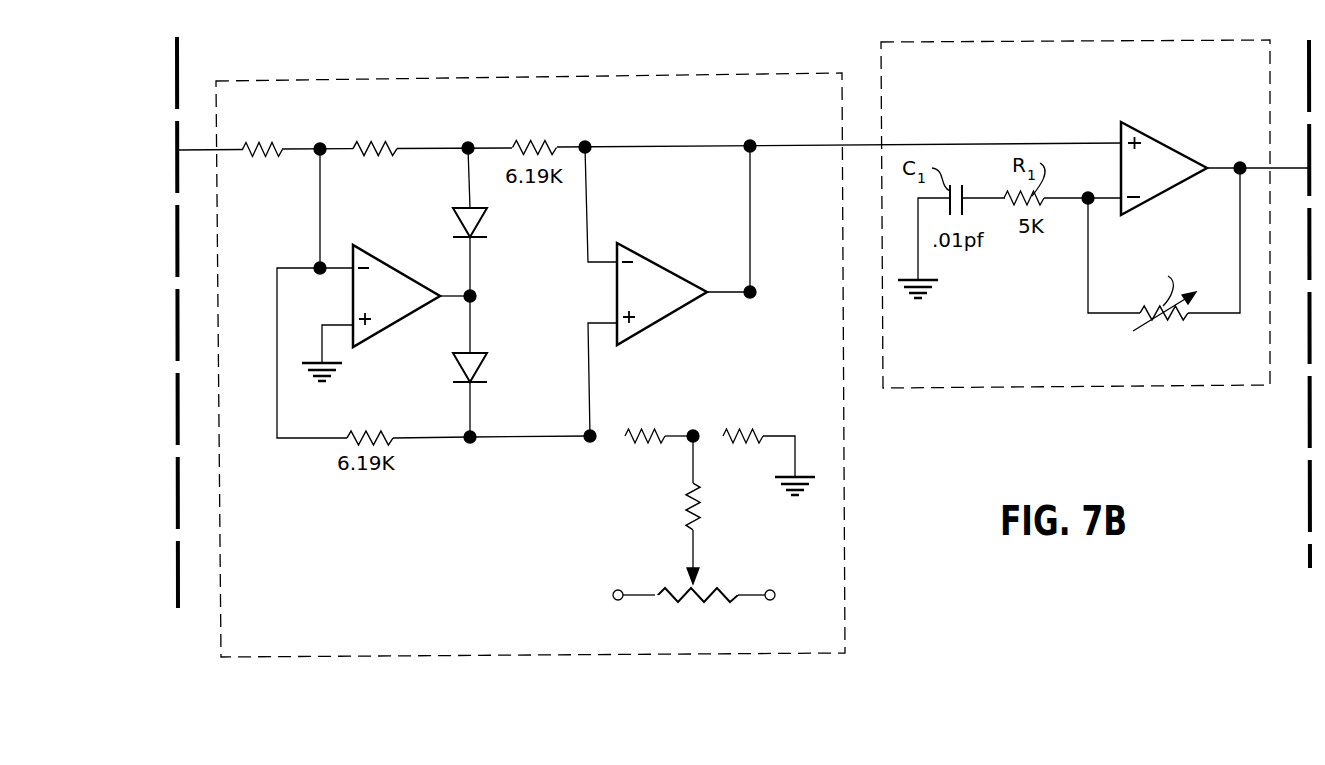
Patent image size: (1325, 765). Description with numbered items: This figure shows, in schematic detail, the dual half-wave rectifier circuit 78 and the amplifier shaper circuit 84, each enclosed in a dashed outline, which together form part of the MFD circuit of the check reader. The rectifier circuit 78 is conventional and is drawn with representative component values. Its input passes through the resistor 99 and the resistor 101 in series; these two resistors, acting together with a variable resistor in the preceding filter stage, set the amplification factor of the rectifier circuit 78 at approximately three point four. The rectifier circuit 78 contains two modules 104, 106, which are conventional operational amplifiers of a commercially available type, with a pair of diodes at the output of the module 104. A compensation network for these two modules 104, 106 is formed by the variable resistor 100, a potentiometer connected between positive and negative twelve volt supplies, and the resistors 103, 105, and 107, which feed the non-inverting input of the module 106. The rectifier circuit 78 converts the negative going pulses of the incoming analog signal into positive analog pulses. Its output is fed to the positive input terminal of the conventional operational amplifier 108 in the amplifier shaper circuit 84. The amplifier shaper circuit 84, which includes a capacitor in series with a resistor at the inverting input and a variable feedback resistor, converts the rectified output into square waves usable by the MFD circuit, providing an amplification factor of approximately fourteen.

The rectifier circuit 78 is at (408, 78).
The amplifier shaper circuit 84 is at (881, 42).
The resistor 99 is at (278, 146).
The variable resistor 100 is at (661, 590).
The resistor 101 is at (390, 146).
The resistor 103 is at (690, 516).
The module 104 is at (411, 277).
The resistor 105 is at (661, 430).
The module 106 is at (646, 260).
The resistor 107 is at (745, 430).
The operational amplifier 108 is at (1175, 151).